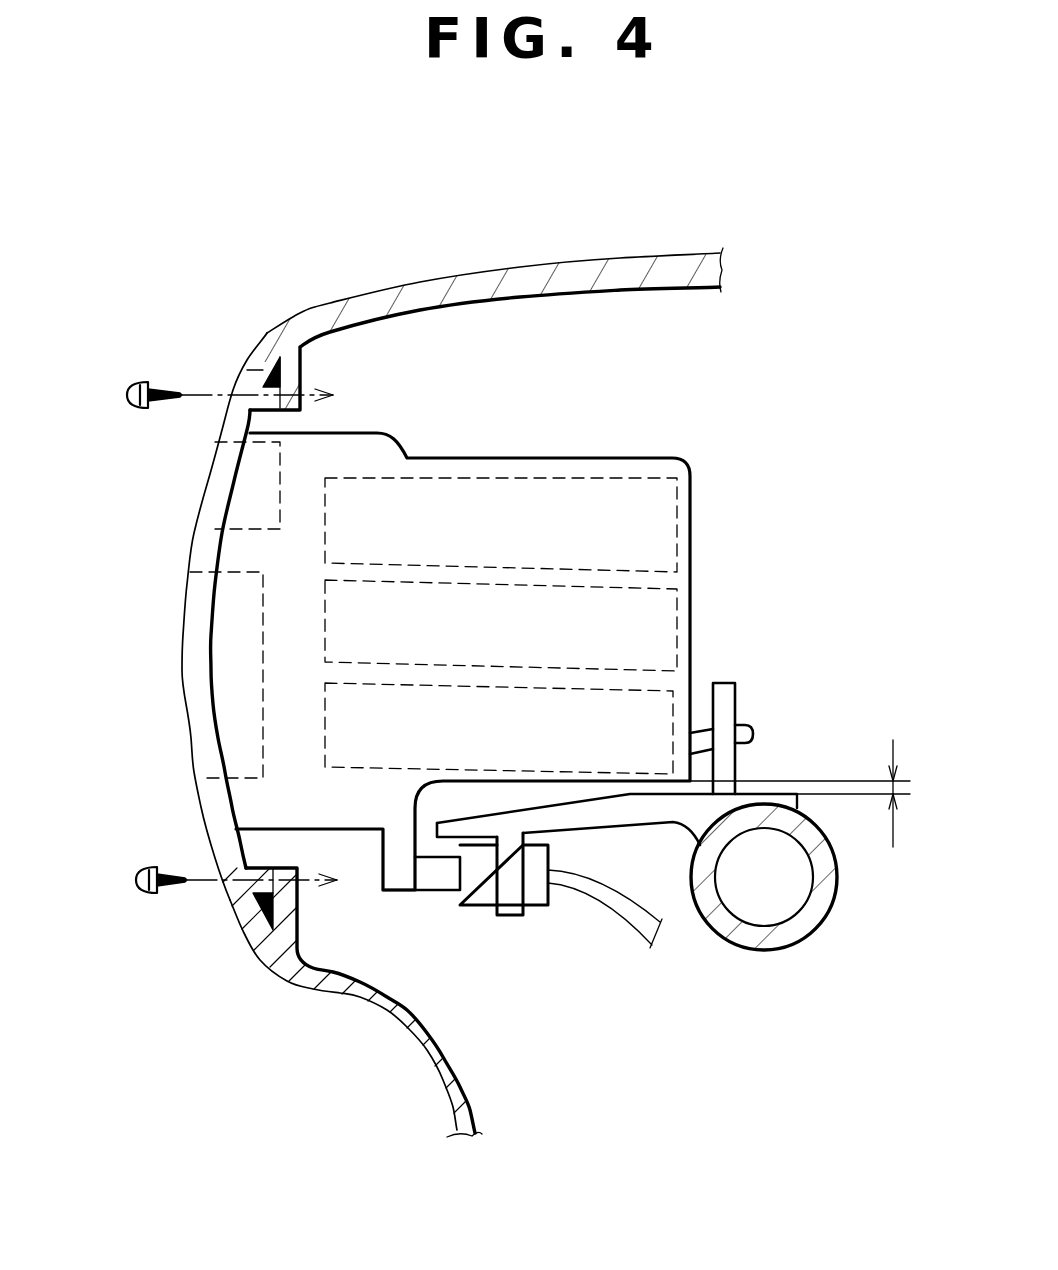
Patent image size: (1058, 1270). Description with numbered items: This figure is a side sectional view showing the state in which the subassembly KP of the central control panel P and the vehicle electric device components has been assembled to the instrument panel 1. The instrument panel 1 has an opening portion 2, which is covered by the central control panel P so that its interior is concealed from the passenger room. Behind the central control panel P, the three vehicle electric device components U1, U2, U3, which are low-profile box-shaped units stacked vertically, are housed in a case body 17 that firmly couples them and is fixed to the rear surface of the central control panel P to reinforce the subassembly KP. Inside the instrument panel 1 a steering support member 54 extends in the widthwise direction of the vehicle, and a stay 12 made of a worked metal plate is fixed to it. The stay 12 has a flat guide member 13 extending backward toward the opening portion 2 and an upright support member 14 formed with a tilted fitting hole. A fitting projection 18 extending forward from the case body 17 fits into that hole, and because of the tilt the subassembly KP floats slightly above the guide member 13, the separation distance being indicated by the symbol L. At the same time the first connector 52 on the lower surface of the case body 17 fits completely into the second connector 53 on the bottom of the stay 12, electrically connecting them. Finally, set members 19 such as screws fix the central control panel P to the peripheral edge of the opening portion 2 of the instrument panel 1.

The instrument panel 1 is at (610, 272).
The opening portion 2 is at (240, 908).
The central control panel P is at (192, 703).
The case body 17 is at (538, 458).
The signal control component U1 is at (625, 492).
The accessory control component U2 is at (660, 605).
The accessory control component U3 is at (665, 700).
The support member 14 is at (735, 690).
The fitting projection 18 is at (752, 733).
The stay 12 is at (673, 835).
The guide member 13 is at (613, 813).
The first connector 52 is at (437, 892).
The second connector 53 is at (487, 893).
The steering support member 54 is at (805, 930).
The separation distance L is at (905, 793).
The subassembly KP is at (426, 437).
The set members 19 is at (133, 408).